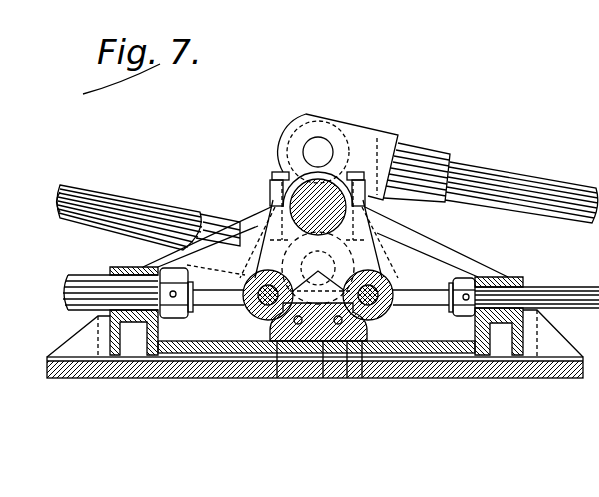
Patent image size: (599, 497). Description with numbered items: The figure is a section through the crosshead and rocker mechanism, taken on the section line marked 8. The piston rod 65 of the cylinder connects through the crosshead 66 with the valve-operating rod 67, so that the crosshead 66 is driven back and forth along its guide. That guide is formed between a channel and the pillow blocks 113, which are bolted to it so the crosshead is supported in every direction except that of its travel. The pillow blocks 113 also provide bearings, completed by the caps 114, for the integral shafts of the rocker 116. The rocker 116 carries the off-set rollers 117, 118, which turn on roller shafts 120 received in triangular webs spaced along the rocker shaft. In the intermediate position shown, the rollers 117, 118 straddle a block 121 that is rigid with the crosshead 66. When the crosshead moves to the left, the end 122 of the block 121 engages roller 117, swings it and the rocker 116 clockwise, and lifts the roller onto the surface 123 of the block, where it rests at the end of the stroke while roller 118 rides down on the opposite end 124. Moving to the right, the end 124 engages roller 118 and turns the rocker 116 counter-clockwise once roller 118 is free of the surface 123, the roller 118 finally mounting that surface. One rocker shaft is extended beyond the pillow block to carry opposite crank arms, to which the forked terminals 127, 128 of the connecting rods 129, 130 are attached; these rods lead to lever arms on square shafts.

The section line 8- 8 is at (318, 107).
The piston rod 65 is at (65, 296).
The crosshead 66 is at (508, 345).
The valve-operating rod 67 is at (560, 296).
The pillow blocks 113 is at (383, 237).
The caps 114 is at (278, 192).
The rocker 116 is at (338, 268).
The roller 117 is at (278, 305).
The roller 118 is at (373, 316).
The roller shafts 120 is at (244, 297).
The block 121 is at (347, 380).
The end of block 122 is at (276, 355).
The surface of block 123 is at (323, 353).
The end of block 124 is at (362, 377).
The forked terminal 127 is at (205, 218).
The forked terminal 128 is at (388, 136).
The connecting rod 129 is at (83, 214).
The connecting rod 130 is at (503, 172).